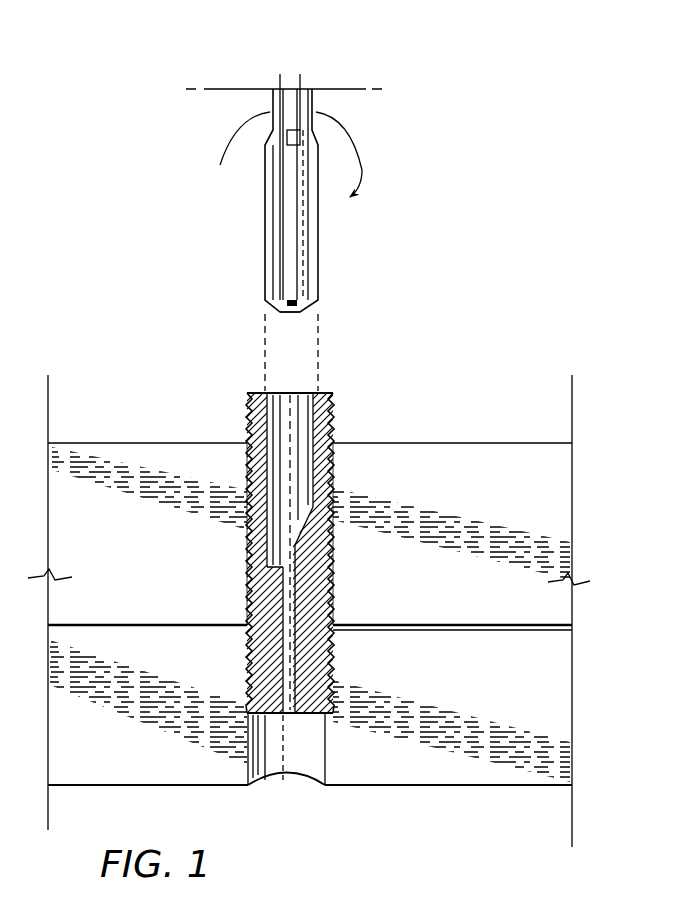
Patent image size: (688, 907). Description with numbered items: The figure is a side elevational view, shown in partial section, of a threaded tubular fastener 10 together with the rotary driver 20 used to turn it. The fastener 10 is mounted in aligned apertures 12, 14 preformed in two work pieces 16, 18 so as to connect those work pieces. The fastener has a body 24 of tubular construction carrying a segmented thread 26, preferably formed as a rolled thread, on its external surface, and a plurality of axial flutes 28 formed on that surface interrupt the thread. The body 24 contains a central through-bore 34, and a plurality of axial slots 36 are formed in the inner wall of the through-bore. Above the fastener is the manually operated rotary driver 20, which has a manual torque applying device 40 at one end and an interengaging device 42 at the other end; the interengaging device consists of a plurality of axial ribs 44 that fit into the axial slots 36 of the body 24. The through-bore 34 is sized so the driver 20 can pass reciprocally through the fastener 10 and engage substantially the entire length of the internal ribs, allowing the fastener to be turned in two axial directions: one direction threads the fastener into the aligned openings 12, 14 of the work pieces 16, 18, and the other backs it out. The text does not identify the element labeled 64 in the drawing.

The threaded tubular fastener 10 is at (299, 530).
The aperture 12 is at (333, 472).
The aperture 14 is at (326, 762).
The work piece 16 is at (550, 505).
The work piece 18 is at (553, 690).
The driver 20 is at (292, 177).
The body 24 is at (260, 392).
The segmented thread 26 is at (252, 657).
The axial flutes 28 is at (327, 573).
The central through-bore 34 is at (290, 392).
The axial slots 36 is at (313, 437).
The manual torque applying device 40 is at (303, 86).
The interengaging device 42 is at (303, 313).
The axial ribs 44 is at (272, 238).
The driver shank line 64 is at (280, 90).